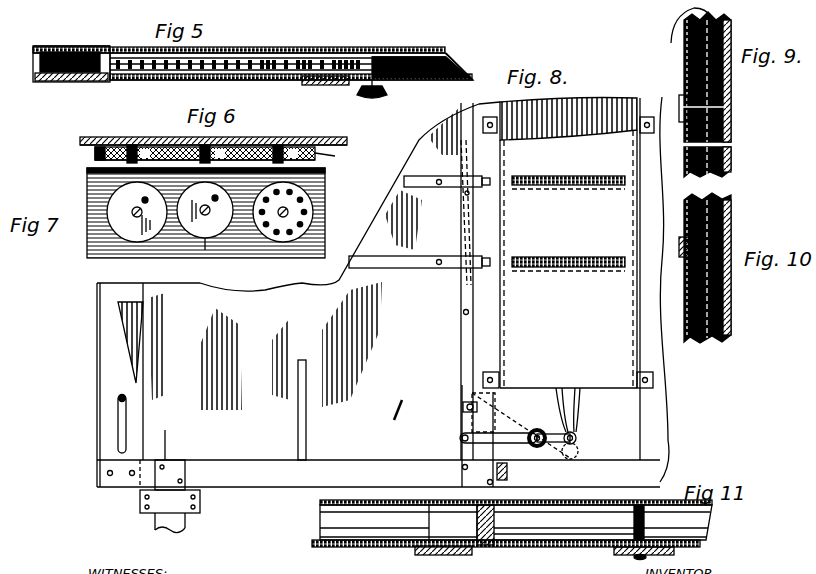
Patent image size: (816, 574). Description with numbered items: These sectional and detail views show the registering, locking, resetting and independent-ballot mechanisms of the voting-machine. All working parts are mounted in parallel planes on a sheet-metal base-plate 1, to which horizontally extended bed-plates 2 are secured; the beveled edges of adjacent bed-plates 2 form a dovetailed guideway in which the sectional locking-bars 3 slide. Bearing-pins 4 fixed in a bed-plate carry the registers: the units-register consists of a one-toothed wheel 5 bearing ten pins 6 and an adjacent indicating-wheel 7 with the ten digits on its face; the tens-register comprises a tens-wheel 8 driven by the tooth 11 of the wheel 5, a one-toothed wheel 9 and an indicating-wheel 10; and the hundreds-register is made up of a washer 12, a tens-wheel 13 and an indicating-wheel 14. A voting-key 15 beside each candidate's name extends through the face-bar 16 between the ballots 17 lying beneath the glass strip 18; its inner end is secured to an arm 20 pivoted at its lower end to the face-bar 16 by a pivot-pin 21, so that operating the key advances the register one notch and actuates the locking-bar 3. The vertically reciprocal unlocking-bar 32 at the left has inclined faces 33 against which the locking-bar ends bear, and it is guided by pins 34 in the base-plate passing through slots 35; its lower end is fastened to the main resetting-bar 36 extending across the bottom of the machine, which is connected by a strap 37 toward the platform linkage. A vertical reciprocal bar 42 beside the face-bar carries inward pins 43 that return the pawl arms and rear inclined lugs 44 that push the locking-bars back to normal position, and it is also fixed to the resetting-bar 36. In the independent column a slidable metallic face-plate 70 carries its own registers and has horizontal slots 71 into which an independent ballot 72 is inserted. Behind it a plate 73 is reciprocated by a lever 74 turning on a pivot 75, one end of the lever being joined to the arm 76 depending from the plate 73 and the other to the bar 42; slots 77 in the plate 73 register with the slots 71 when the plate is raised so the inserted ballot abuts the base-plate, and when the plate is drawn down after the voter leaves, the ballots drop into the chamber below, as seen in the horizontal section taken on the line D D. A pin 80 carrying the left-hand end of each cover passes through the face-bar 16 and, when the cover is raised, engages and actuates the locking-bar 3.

In FIG. 5, the base-plate 1 is at (435, 50).
In FIG. 8, the base-plate 1 is at (398, 410).
In FIG. 5, the bed-plates 2 is at (128, 0).
In FIG. 7, the bed-plates 2 is at (304, 250).
In FIG. 5, the locking-bars 3 is at (454, 54).
In FIG. 6, the bearing-pins 4 is at (134, 137).
In FIG. 7, the bearing-pins 4 is at (130, 214).
In FIG. 7, the one-toothed wheel 5 is at (319, 202).
In FIG. 7, the pins 6 is at (317, 212).
In FIG. 5, the indicating-wheel 7 is at (516, 48).
In FIG. 6, the indicating-wheel 7 is at (315, 157).
In FIG. 6, the tens-wheel 8 is at (180, 137).
In FIG. 7, the tens-wheel 8 is at (222, 240).
In FIG. 6, the one-toothed wheel 9 is at (252, 137).
In FIG. 5, the indicating-wheel 10 is at (424, 29).
In FIG. 7, the tooth 11 is at (262, 252).
In FIG. 6, the washer 12 is at (108, 137).
In FIG. 7, the washer 12 is at (129, 204).
In FIG. 6, the tens-wheel 13 is at (97, 153).
In FIG. 5, the indicating-wheel 14 is at (71, 25).
In FIG. 6, the indicating-wheel 14 is at (97, 159).
In FIG. 5, the voting-key 15 is at (372, 97).
In FIG. 5, the face-bar 16 is at (330, 86).
In FIG. 5, the ballots 17 is at (265, 78).
In FIG. 5, the glass strip 18 is at (472, 79).
In FIG. 5, the arm 20 is at (362, 52).
In FIG. 5, the pivot-pin 21 is at (352, 48).
In FIG. 5, the unlocking-bar 32 is at (42, 47).
In FIG. 8, the unlocking-bar 32 is at (122, 342).
In FIG. 8, the inclined faces 33 is at (130, 357).
In FIG. 8, the pins 34 is at (127, 394).
In FIG. 8, the slots 35 is at (168, 444).
In FIG. 8, the main resetting-bar 36 is at (268, 480).
In FIG. 8, the strap 37 is at (185, 522).
In FIG. 5, the vertical reciprocal bar 42 is at (581, 0).
In FIG. 8, the vertical reciprocal bar 42 is at (307, 433).
In FIG. 5, the pins 43 is at (272, 36).
In FIG. 8, the pins 43 is at (464, 312).
In FIG. 8, the inclined lugs 44 is at (469, 283).
In FIG. 9, the metallic face-plate 70 is at (684, 78).
In FIG. 10, the horizontal slots 71 is at (679, 258).
In FIG. 9, the ballot 72 is at (730, 110).
In FIG. 8, the plate 73 is at (568, 243).
In FIG. 9, the plate 73 is at (681, 36).
In FIG. 8, the lever 74 is at (575, 438).
In FIG. 8, the pivot 75 is at (535, 431).
In FIG. 8, the arm 76 is at (587, 392).
In FIG. 8, the horizontal slots 77 is at (542, 283).
In FIG. 11, the pin 80 is at (487, 522).
In FIG. 8, the section line D D is at (352, 344).
In FIG. 10, the section line D D is at (707, 263).